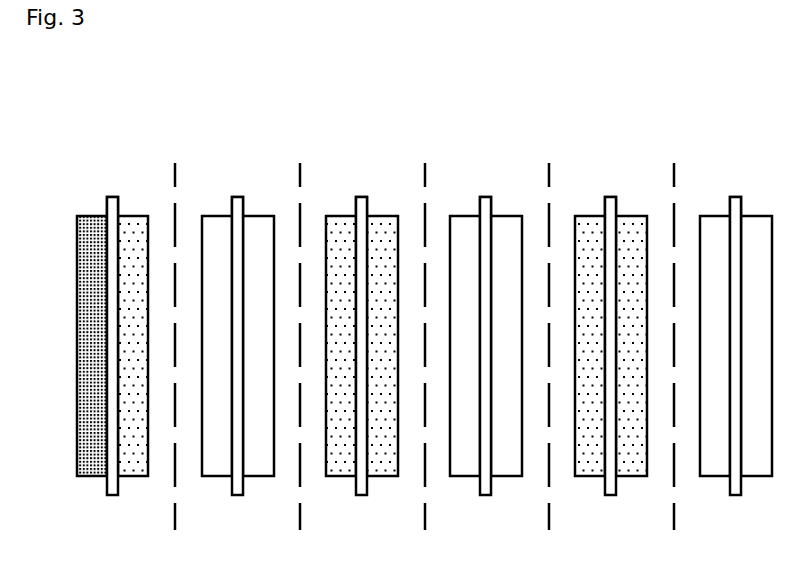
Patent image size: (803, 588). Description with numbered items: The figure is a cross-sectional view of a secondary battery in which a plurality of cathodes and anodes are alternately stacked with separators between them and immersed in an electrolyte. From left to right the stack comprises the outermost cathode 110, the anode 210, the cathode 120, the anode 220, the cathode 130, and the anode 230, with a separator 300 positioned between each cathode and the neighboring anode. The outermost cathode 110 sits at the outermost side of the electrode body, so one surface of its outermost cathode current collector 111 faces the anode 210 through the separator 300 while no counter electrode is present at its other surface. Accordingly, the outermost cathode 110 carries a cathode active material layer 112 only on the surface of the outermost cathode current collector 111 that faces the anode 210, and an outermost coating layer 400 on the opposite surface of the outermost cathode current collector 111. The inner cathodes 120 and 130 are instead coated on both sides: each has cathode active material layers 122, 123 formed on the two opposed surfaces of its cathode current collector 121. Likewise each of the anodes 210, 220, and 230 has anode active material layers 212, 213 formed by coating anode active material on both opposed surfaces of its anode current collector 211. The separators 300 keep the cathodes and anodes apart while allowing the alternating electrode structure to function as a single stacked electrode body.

The outermost cathode 110 is at (80, 180).
The outermost cathode current collector 111 is at (112, 497).
The cathode active material layer 112 is at (140, 477).
The outermost coating layer 400 is at (86, 477).
The cathode 120 is at (329, 180).
The cathode current collector 121 is at (362, 497).
The cathode active material layer 122 is at (335, 477).
The cathode active material layer 123 is at (388, 477).
The cathode 130 is at (578, 180).
The anode 210 is at (205, 180).
The anode current collector 211 is at (237, 497).
The anode active material layer 212 is at (211, 477).
The anode active material layer 213 is at (265, 477).
The anode 220 is at (453, 180).
The anode 230 is at (702, 180).
The separator 300 is at (172, 223).